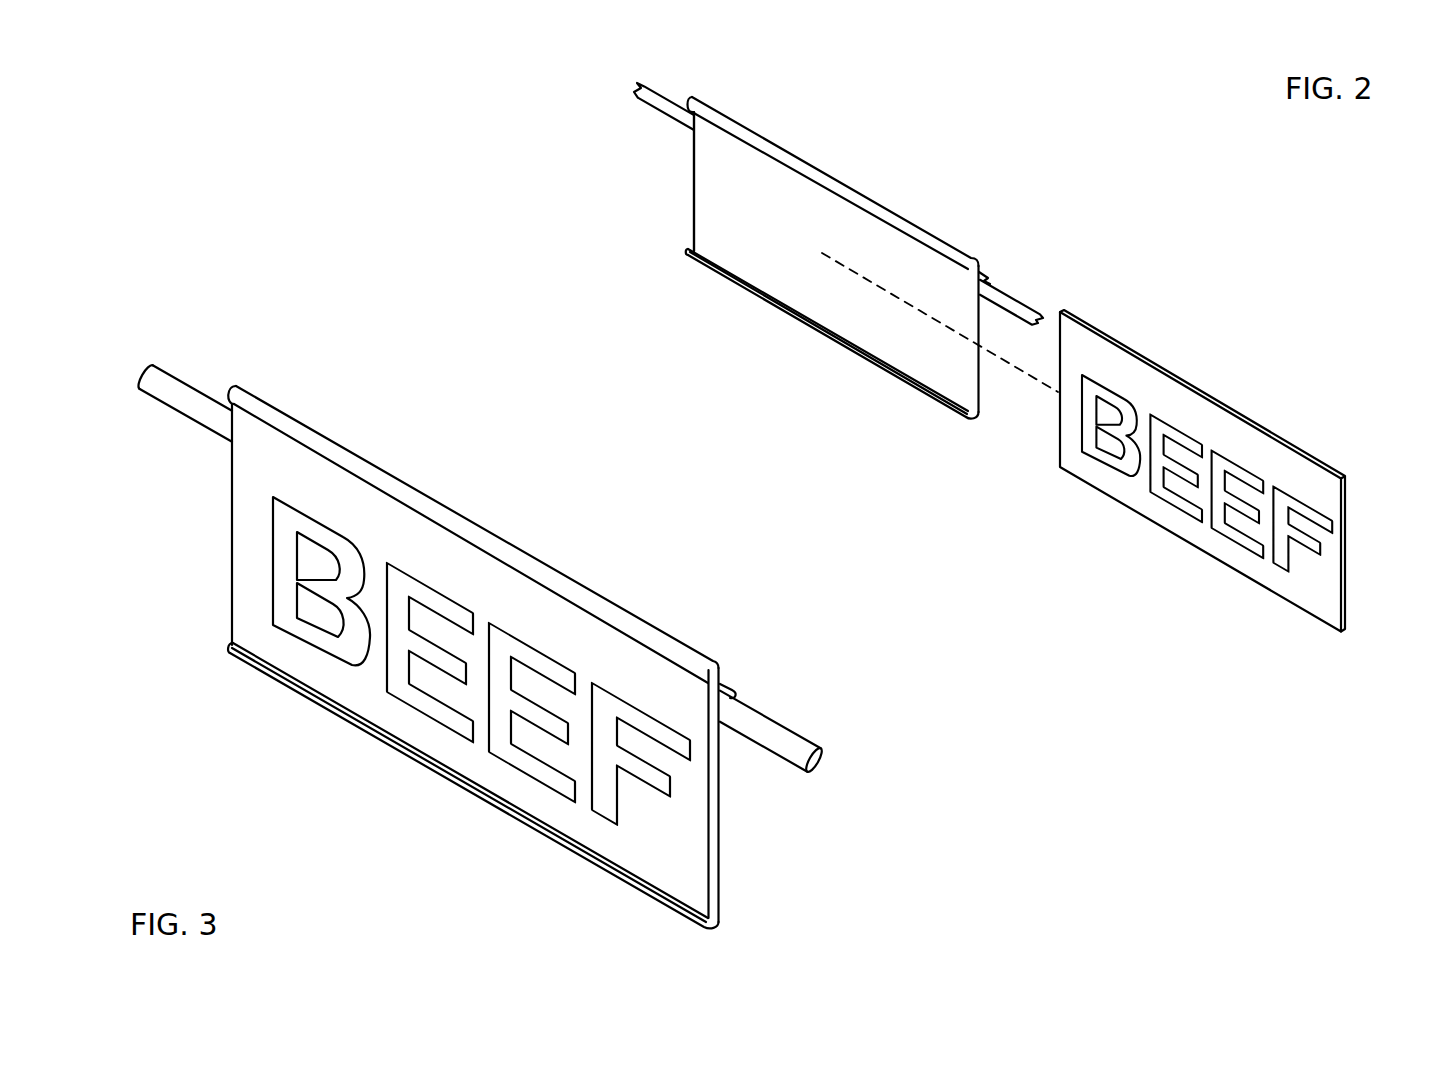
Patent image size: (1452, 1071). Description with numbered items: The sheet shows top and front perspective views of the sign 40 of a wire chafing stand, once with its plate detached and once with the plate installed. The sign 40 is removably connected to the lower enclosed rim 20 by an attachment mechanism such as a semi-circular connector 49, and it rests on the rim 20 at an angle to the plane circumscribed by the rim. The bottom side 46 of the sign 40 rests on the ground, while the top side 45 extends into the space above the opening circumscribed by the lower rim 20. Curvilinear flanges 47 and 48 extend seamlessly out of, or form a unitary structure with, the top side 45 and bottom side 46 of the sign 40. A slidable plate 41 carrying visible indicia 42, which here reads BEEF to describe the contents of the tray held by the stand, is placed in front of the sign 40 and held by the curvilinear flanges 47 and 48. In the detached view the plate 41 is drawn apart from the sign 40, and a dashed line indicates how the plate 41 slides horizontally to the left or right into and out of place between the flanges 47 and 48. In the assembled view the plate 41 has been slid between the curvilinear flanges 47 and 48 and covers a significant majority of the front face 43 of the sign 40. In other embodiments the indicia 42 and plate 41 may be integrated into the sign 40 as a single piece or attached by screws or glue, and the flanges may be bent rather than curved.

In FIG. 2, the lower enclosed rim 20 is at (650, 92).
In FIG. 3, the lower enclosed rim 20 is at (159, 375).
In FIG. 2, the sign 40 is at (782, 218).
In FIG. 3, the sign 40 is at (513, 657).
In FIG. 2, the slidable plate 41 is at (1232, 462).
In FIG. 3, the slidable plate 41 is at (571, 695).
In FIG. 2, the visible indicia 42 is at (1196, 441).
In FIG. 3, the visible indicia 42 is at (653, 783).
In FIG. 2, the front face of the sign 43 is at (705, 188).
In FIG. 2, the top side of the sign 45 is at (833, 143).
In FIG. 3, the top side of the sign 45 is at (473, 534).
In FIG. 2, the bottom side of the sign 46 is at (737, 288).
In FIG. 3, the bottom side of the sign 46 is at (473, 785).
In FIG. 2, the curvilinear flange 47 is at (702, 110).
In FIG. 3, the curvilinear flange 47 is at (517, 563).
In FIG. 2, the curvilinear flange 48 is at (687, 252).
In FIG. 3, the curvilinear flange 48 is at (500, 803).
In FIG. 2, the semi-circular connector 49 is at (986, 276).
In FIG. 3, the semi-circular connector 49 is at (730, 687).